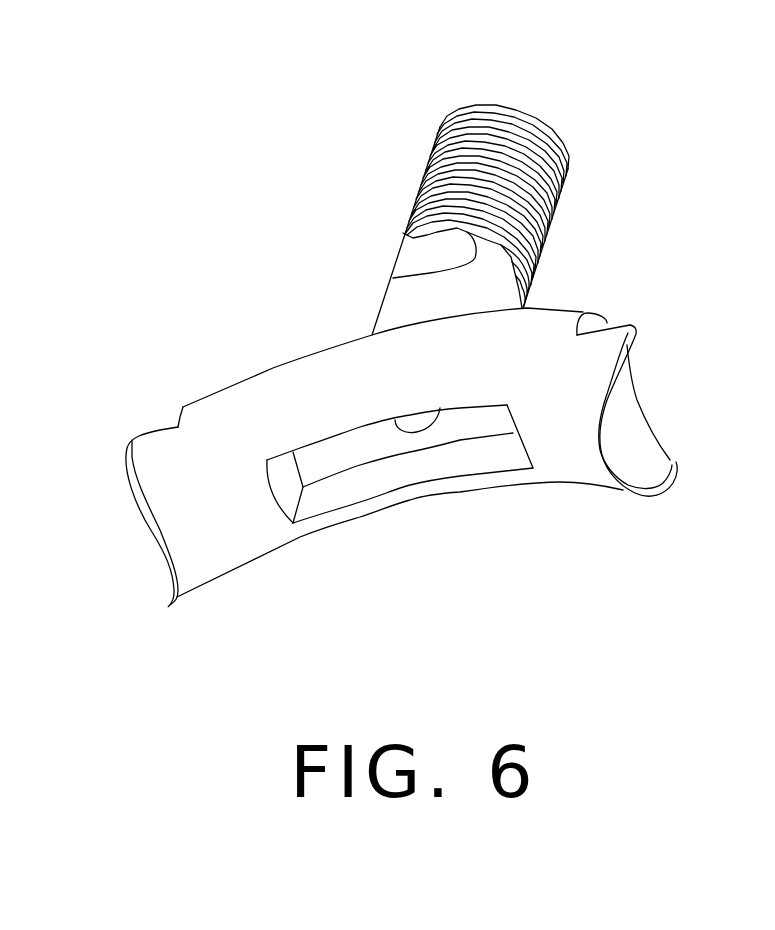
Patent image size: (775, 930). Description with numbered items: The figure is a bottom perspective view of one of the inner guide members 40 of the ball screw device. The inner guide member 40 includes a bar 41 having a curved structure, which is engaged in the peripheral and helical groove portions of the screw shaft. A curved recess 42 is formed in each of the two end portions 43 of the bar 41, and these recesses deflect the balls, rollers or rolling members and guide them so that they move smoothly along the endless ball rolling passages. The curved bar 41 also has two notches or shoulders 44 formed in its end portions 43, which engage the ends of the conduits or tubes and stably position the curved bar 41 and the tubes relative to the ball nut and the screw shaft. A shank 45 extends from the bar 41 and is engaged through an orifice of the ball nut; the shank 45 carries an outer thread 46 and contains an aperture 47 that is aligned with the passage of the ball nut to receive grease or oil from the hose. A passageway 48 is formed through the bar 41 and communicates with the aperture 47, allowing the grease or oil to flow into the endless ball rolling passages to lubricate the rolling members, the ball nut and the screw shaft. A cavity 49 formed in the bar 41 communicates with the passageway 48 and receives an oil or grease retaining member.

The inner guide member 40 is at (581, 178).
The bar 41 is at (287, 363).
The curved recess 42 is at (647, 452).
The end portion 43 is at (147, 520).
The notch 44 is at (173, 415).
The shank 45 is at (527, 300).
The outer thread 46 is at (447, 143).
The aperture 47 is at (428, 250).
The passageway 48 is at (428, 422).
The cavity 49 is at (368, 485).